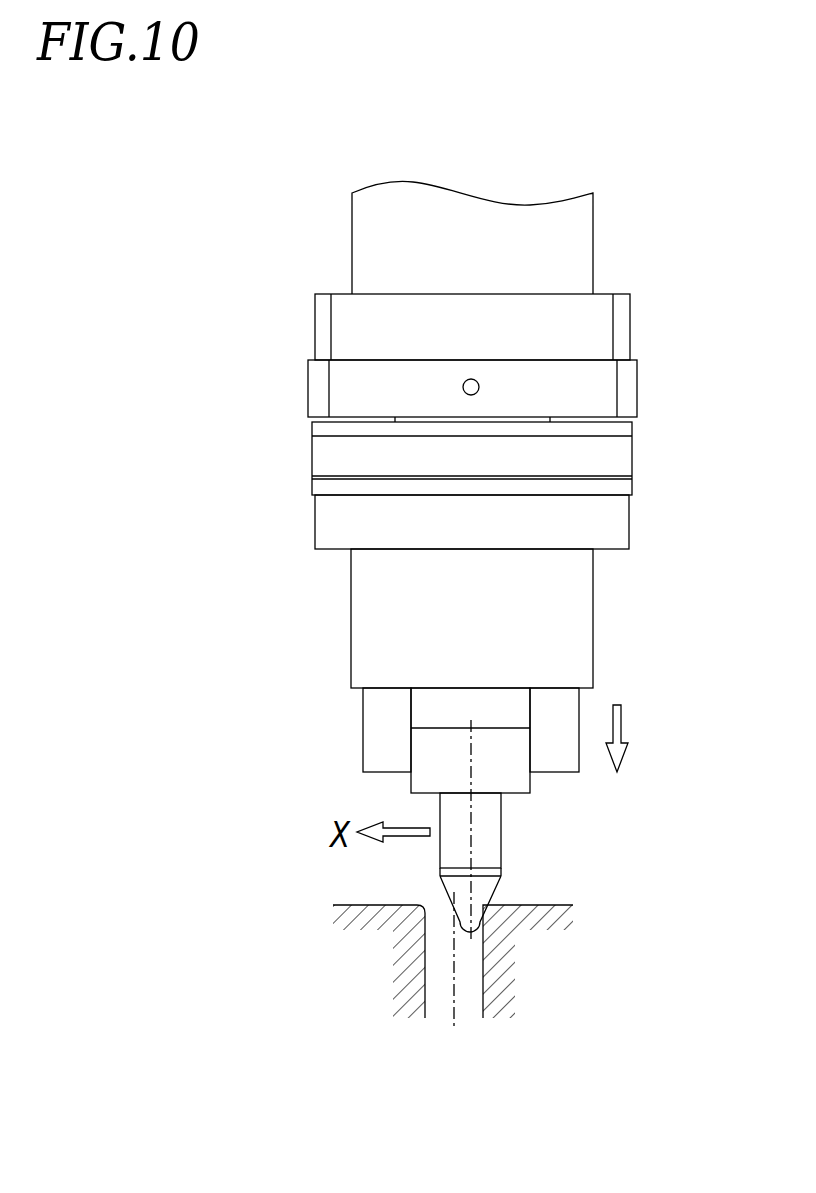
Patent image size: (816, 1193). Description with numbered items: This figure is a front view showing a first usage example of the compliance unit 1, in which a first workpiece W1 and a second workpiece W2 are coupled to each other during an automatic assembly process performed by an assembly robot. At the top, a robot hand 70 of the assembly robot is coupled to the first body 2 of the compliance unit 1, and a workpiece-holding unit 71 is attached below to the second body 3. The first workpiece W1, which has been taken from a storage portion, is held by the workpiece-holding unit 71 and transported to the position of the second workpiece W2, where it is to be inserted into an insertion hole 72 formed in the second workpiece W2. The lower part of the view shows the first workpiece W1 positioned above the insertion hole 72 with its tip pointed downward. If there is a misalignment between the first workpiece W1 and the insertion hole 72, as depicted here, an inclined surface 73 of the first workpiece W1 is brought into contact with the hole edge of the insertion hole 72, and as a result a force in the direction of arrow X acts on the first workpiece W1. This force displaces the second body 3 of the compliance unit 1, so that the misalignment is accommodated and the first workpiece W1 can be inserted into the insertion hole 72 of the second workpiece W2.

The compliance unit 1 is at (534, 618).
The first body 2 is at (345, 457).
The second body 3 is at (335, 518).
The robot hand 70 is at (383, 228).
The workpiece-holding unit 71 is at (377, 609).
The insertion hole 72 is at (443, 976).
The inclined surface 73 is at (497, 892).
The first workpiece W1 is at (488, 812).
The second workpiece W2 is at (503, 968).